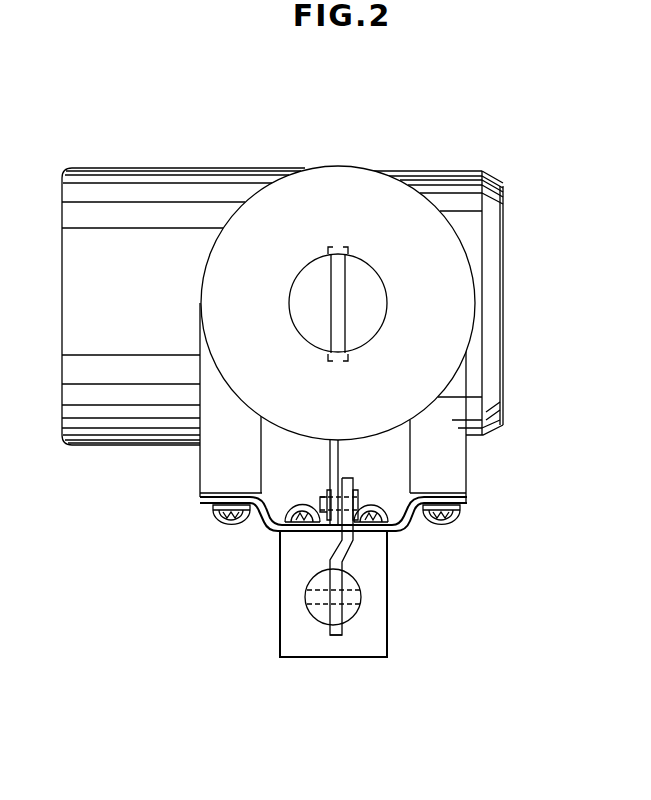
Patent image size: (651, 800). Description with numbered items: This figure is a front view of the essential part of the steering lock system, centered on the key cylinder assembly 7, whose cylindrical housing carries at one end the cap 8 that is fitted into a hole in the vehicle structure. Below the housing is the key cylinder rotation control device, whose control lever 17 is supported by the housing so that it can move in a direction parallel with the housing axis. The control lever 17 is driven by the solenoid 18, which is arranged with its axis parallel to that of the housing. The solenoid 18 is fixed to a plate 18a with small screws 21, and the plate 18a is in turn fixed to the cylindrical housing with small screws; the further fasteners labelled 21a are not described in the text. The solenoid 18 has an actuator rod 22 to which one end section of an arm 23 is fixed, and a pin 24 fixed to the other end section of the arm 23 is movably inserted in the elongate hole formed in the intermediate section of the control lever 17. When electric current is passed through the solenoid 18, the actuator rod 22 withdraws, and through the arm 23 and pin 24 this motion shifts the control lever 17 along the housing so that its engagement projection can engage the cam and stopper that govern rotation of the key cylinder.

The key cylinder assembly 7 is at (462, 230).
The cap 8 is at (470, 322).
The control lever 17 is at (340, 472).
The solenoid 18 is at (383, 617).
The plate 18a is at (468, 500).
The small screws 21 is at (292, 513).
The outer nut 21a is at (230, 527).
The actuator rod 22 is at (360, 588).
The arm 23 is at (333, 640).
The pin 24 is at (320, 505).